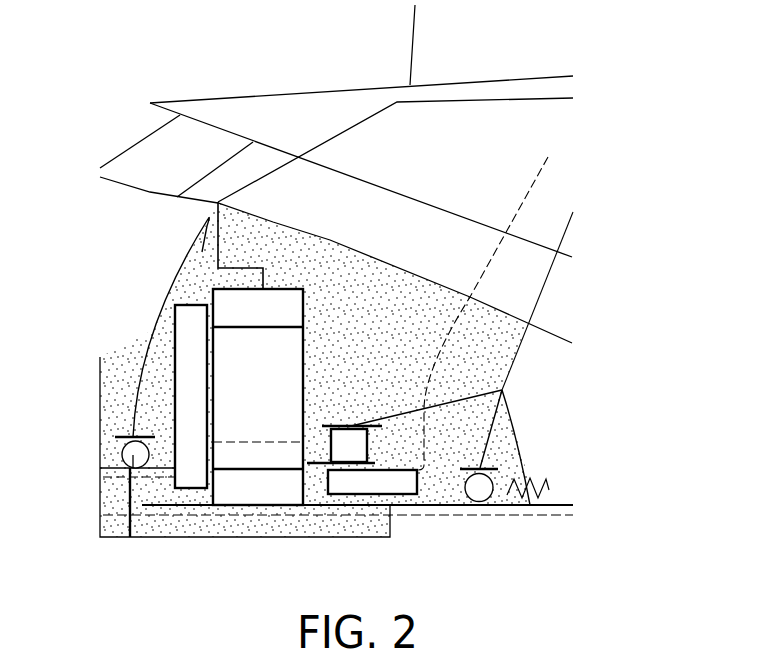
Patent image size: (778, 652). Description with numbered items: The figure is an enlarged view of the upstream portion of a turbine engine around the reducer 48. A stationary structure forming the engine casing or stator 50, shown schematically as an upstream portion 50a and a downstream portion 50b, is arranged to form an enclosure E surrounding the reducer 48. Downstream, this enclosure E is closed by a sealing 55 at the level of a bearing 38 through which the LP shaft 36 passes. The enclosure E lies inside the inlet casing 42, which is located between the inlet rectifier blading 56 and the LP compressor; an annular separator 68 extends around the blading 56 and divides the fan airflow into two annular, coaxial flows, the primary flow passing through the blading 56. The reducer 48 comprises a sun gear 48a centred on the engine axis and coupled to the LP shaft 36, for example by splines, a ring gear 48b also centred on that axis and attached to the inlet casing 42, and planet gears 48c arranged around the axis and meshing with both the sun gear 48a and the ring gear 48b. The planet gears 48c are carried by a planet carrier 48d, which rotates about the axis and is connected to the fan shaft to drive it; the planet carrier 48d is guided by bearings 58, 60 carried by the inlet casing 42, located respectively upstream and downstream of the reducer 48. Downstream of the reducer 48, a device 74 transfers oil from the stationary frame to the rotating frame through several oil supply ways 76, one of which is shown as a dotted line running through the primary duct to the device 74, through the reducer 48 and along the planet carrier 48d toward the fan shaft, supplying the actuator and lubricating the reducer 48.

The LP shaft 36 is at (443, 505).
The bearing 38 is at (475, 495).
The inlet casing 42 is at (584, 122).
The reducer 48 is at (173, 393).
The sun gear 48a is at (268, 482).
The ring gear 48b is at (240, 318).
The planet gears 48c is at (240, 377).
The planet carrier 48d is at (190, 430).
The engine casing or stator 50 is at (357, 361).
The upstream portion 50a is at (165, 297).
The downstream portion 50b is at (512, 420).
The sealing 55 is at (548, 488).
The inlet rectifier blading 56 is at (183, 135).
The bearing 58 is at (133, 468).
The bearing 60 is at (347, 432).
The annular separator 68 is at (150, 103).
The oil transfer device 74 is at (360, 480).
The oil supply ways 76 is at (237, 445).
The enclosure E is at (473, 332).